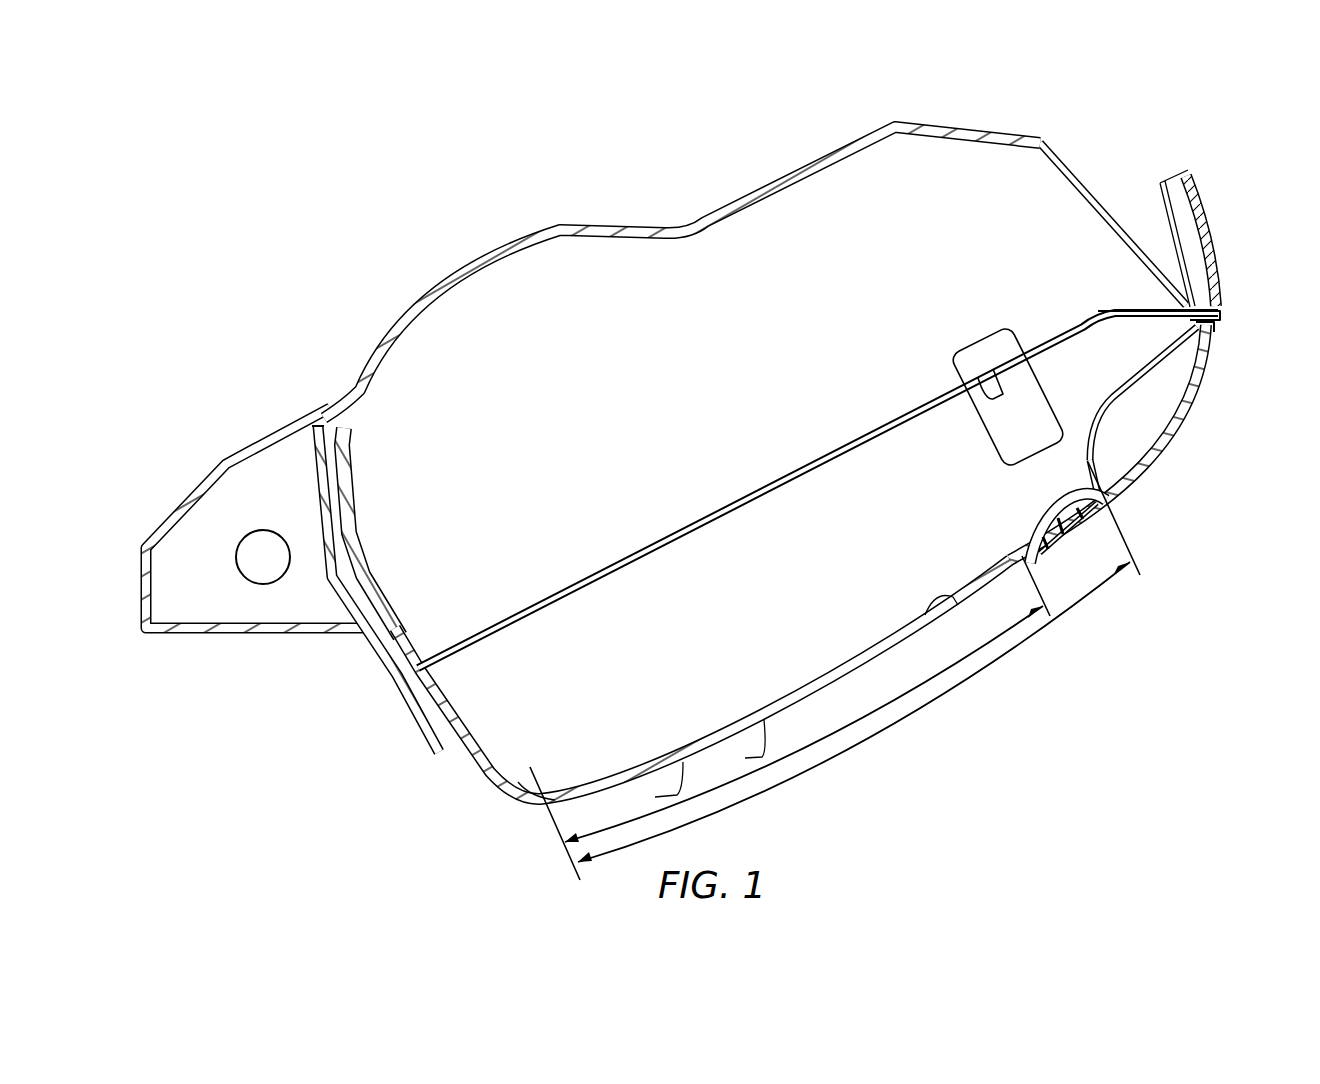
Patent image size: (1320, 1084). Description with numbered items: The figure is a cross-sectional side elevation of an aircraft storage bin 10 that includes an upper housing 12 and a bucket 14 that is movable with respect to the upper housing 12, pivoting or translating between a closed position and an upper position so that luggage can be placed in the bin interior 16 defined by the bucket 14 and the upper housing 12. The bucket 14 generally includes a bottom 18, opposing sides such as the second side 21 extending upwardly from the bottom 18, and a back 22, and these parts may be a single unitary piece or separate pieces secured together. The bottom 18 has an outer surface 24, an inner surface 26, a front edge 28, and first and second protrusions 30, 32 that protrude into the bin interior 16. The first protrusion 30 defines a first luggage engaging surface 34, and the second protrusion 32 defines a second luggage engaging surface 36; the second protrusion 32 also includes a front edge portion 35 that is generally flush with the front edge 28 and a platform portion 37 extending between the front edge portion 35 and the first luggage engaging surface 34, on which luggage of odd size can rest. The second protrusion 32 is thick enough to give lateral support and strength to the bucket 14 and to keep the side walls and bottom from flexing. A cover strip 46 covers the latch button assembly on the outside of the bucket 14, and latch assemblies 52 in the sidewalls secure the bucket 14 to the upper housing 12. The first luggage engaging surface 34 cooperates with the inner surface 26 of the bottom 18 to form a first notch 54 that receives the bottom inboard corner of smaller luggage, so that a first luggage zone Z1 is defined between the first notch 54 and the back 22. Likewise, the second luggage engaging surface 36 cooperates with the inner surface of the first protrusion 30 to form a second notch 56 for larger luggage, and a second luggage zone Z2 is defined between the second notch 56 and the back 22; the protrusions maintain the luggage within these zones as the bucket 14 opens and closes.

The aircraft storage bin 10 is at (708, 464).
The upper housing 12 is at (668, 232).
The bucket 14 is at (553, 774).
The bin interior 16 is at (587, 450).
The bottom 18 is at (740, 747).
The second side 21 is at (557, 795).
The back 22 is at (390, 623).
The outer surface 24 is at (654, 786).
The inner surface 26 is at (925, 615).
The front edge 28 is at (1217, 314).
The first protrusion 30 is at (1044, 511).
The second protrusion 32 is at (1147, 364).
The first luggage engaging surface 34 is at (1033, 528).
The front edge portion 35 is at (1202, 341).
The second luggage engaging surface 36 is at (1090, 452).
The platform portion 37 is at (1188, 368).
The cover strip 46 is at (1097, 508).
The latch assembly 52 is at (918, 387).
The first notch 54 is at (1025, 562).
The second notch 56 is at (1107, 474).
The first luggage zone Z1 is at (793, 752).
The second luggage zone Z2 is at (840, 750).